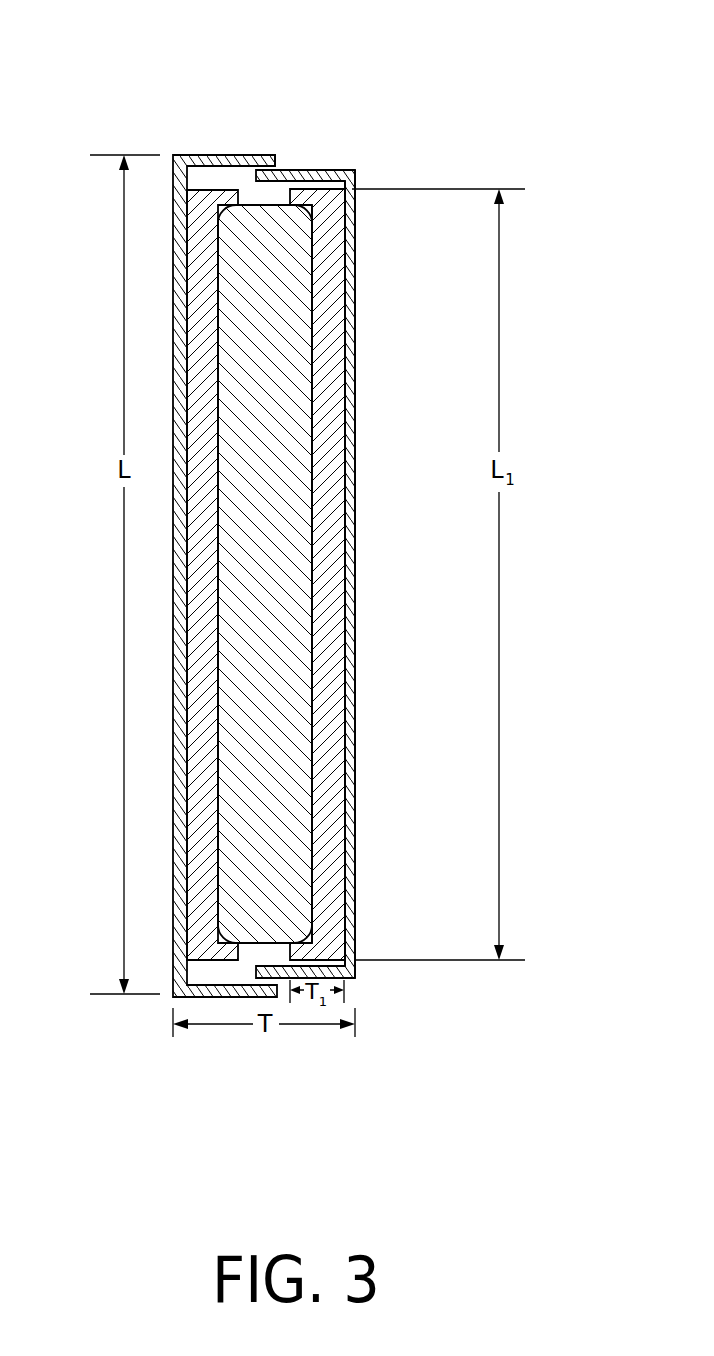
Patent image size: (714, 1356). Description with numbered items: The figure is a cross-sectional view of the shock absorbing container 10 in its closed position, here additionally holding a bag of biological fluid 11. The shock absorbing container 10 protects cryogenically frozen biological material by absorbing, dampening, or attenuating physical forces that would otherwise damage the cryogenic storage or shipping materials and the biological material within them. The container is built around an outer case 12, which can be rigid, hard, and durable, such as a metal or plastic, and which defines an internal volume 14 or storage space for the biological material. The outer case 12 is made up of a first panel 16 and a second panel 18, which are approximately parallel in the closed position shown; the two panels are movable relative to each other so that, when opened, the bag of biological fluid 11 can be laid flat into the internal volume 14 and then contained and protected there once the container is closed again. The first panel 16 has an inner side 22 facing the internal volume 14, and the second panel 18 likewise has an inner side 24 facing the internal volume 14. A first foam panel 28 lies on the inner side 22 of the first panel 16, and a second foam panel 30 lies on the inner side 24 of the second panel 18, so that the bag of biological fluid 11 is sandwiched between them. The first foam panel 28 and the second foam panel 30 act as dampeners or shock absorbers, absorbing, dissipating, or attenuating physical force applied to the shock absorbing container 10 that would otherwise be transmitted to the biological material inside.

The shock absorbing container 10 is at (273, 500).
The bag of biological fluid 11 is at (279, 388).
The outer case 12 is at (344, 529).
The internal volume 14 is at (386, 525).
The first panel 16 is at (356, 238).
The second panel 18 is at (176, 544).
The inner side 22 is at (193, 172).
The inner side 24 is at (337, 222).
The first foam panel 28 is at (333, 298).
The second foam panel 30 is at (207, 392).